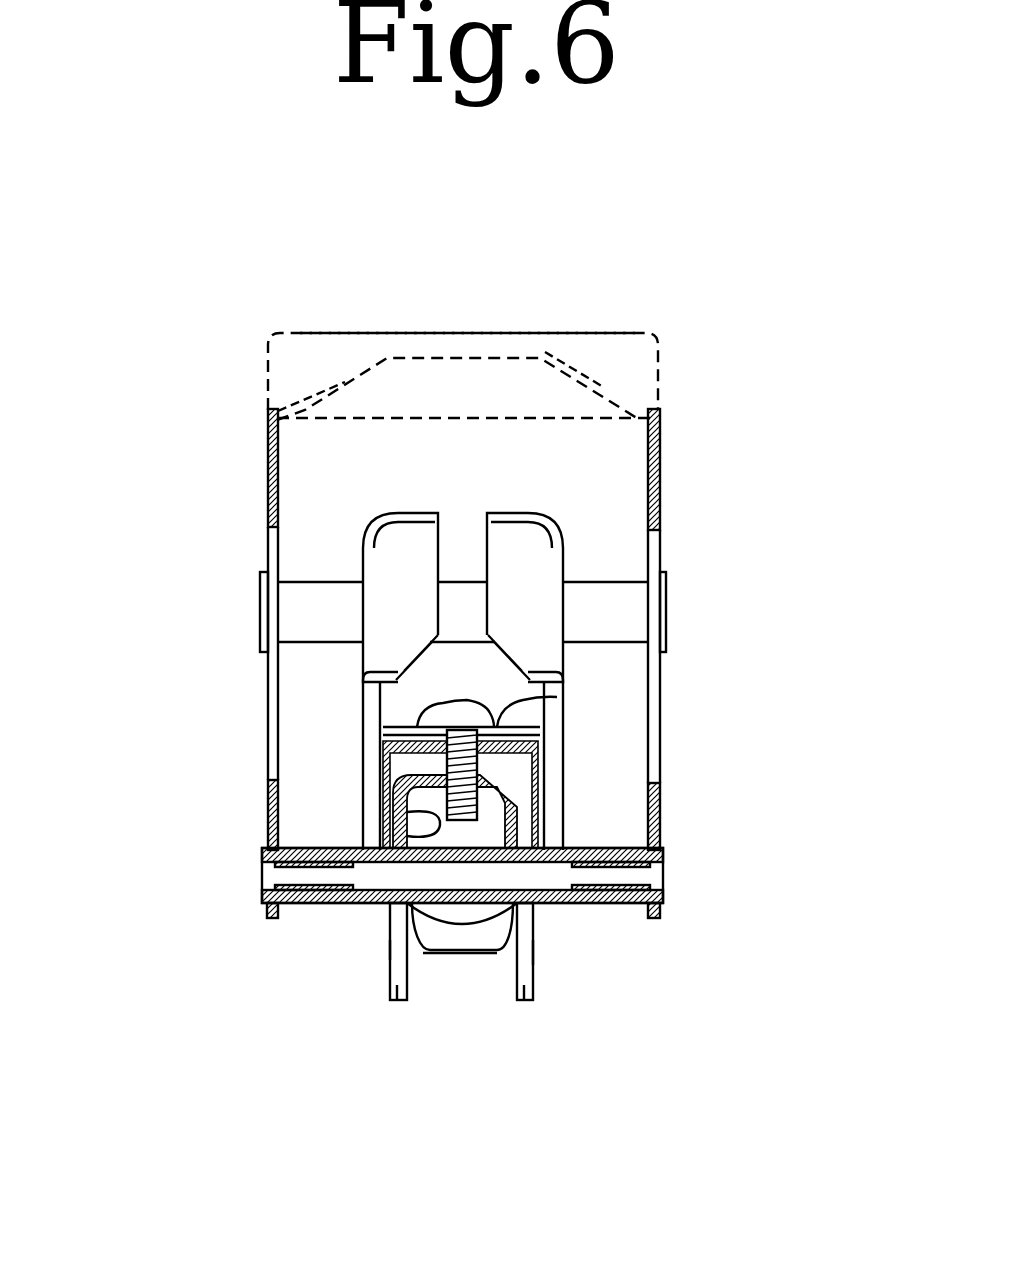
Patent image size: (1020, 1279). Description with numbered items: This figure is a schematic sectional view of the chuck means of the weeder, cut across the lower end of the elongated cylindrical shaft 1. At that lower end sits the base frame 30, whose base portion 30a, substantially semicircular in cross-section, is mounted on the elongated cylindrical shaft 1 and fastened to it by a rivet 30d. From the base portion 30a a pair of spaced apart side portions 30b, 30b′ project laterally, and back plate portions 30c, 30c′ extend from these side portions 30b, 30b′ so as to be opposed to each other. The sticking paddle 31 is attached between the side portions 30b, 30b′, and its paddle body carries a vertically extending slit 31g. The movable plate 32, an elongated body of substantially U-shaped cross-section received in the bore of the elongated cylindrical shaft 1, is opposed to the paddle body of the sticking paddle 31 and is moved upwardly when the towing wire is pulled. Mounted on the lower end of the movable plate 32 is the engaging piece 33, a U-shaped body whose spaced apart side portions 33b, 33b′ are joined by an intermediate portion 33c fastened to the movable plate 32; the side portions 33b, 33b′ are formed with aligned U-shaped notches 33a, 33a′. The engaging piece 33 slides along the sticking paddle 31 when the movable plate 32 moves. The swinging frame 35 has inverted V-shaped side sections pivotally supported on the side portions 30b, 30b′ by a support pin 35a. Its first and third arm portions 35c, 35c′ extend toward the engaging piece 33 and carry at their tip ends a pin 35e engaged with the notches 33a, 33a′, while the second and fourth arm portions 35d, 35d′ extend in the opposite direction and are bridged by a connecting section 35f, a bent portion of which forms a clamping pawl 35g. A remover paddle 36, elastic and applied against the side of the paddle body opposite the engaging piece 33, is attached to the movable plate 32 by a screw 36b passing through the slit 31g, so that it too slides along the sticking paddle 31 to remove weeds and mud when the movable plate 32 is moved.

The elongated cylindrical shaft 1 is at (457, 925).
The base frame 30 is at (540, 915).
The base portion 30a is at (487, 940).
The side portion 30b is at (557, 727).
The side portion 30b′ is at (363, 708).
The back plate portion 30c is at (527, 573).
The back plate portion 30c′ is at (390, 550).
The rivet 30d is at (436, 952).
The sticking paddle 31 is at (547, 773).
The vertically extending slit 31g is at (545, 700).
The movable plate 32 is at (412, 815).
The engaging piece 33 is at (389, 972).
The notch 33a is at (523, 1003).
The notch 33a′ is at (393, 1002).
The side portion 33b is at (533, 963).
The side portion 33b′ is at (390, 948).
The intermediate portion 33c is at (390, 763).
The swinging frame 35 is at (670, 513).
The support pin 35a is at (665, 630).
The first arm portion 35c is at (660, 822).
The third arm portion 35c′ is at (267, 820).
The second arm portion 35d is at (660, 472).
The fourth arm portion 35d′ is at (267, 447).
The pin 35e is at (617, 905).
The connecting section 35f is at (565, 353).
The clamping pawl 35g is at (453, 377).
The remover paddle 36 is at (403, 718).
The screw 36b is at (440, 707).